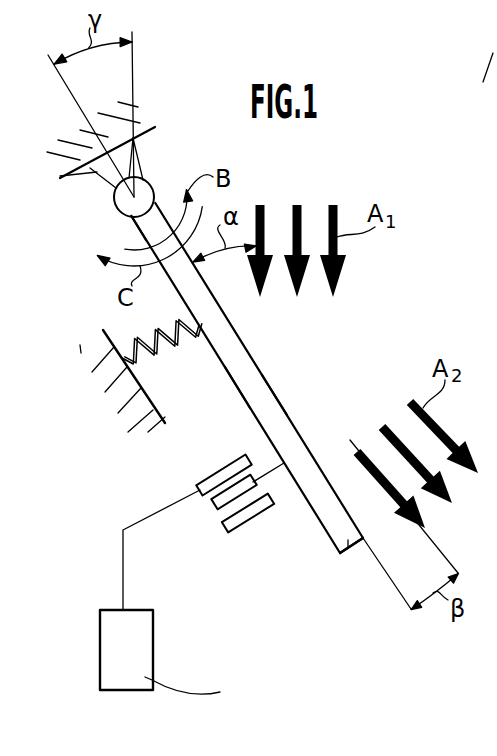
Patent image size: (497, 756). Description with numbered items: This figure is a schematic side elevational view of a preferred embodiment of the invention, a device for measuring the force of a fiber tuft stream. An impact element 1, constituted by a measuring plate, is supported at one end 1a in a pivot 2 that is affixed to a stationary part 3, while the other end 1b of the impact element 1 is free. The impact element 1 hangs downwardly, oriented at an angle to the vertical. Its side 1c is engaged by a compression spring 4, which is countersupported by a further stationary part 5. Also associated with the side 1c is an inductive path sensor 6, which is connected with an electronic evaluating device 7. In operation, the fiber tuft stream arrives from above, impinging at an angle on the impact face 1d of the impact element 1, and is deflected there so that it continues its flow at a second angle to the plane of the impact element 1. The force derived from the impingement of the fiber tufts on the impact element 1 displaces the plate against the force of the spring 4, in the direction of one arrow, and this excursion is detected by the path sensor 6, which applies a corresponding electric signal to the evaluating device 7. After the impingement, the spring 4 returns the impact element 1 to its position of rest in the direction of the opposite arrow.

The impact element 1 is at (310, 453).
The one end of the impact element 1a is at (138, 226).
The other end of the impact element 1b is at (349, 545).
The side of the impact element 1c is at (237, 388).
The impact face 1d is at (274, 393).
The pivot 2 is at (152, 184).
The stationary part 3 is at (93, 177).
The compression spring 4 is at (167, 363).
The stationary part 5 is at (112, 397).
The inductive path sensor 6 is at (246, 521).
The electronic evaluating device 7 is at (152, 667).